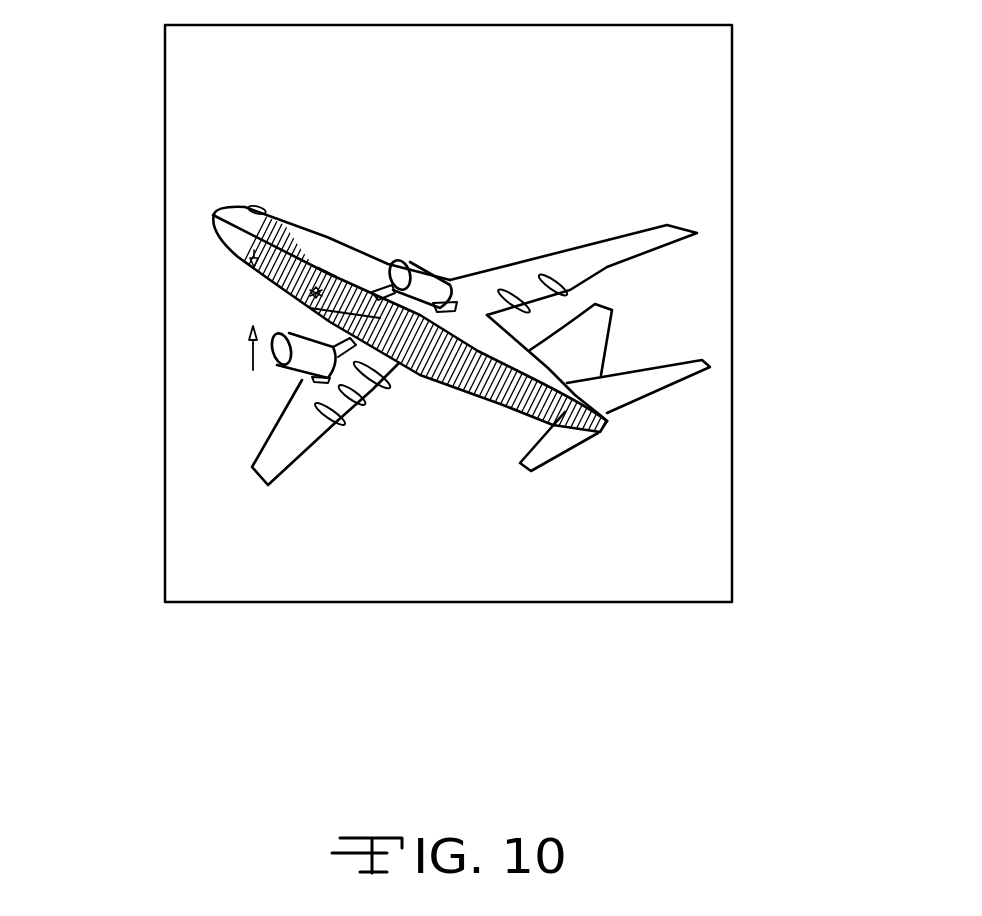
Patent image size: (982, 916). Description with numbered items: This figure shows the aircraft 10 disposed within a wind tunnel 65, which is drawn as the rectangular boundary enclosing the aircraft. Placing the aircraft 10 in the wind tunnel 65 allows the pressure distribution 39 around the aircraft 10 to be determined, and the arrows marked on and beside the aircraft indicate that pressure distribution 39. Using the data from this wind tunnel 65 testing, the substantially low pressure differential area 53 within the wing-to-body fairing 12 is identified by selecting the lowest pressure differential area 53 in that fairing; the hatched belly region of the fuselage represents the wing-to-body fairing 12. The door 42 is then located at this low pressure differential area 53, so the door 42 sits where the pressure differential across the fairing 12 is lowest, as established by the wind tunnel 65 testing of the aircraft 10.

The aircraft 10 is at (480, 160).
The wing-to-body fairing 12 is at (426, 384).
The pressure distribution 39 is at (252, 252).
The door 42 is at (311, 293).
The low pressure differential area 53 is at (325, 273).
The wind tunnel 65 is at (165, 323).